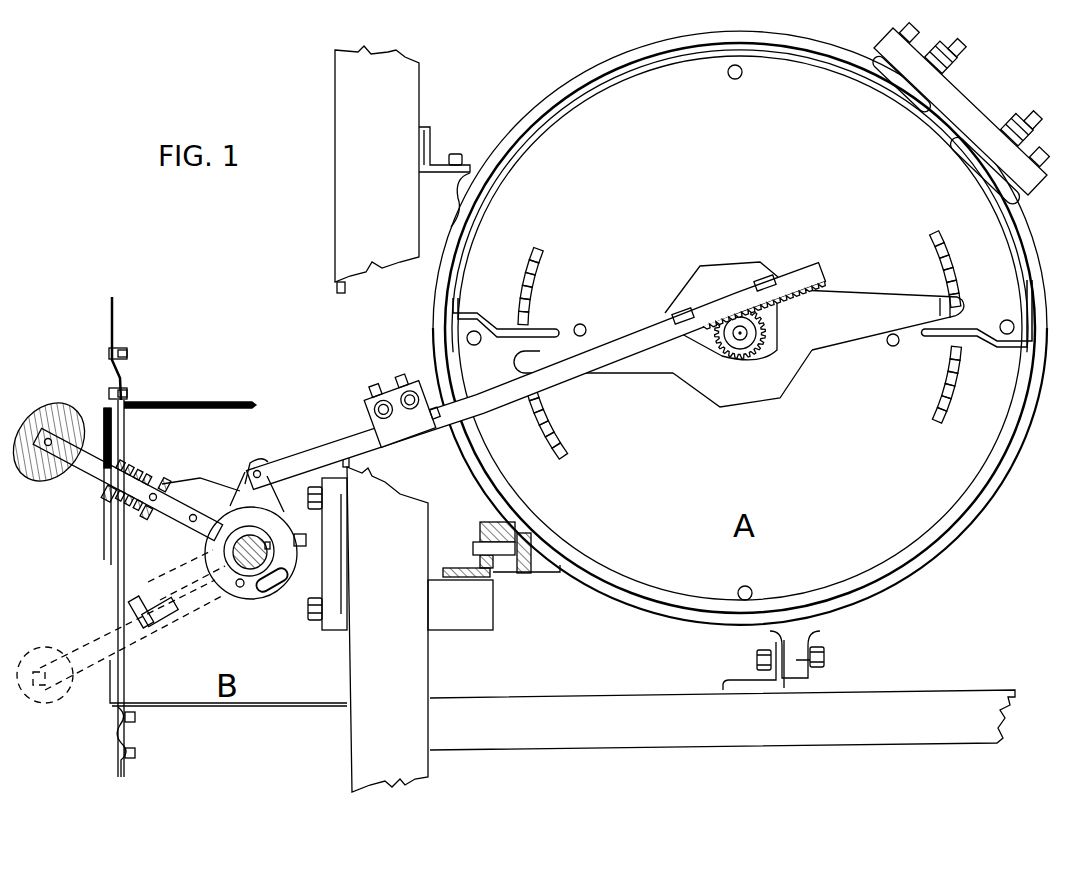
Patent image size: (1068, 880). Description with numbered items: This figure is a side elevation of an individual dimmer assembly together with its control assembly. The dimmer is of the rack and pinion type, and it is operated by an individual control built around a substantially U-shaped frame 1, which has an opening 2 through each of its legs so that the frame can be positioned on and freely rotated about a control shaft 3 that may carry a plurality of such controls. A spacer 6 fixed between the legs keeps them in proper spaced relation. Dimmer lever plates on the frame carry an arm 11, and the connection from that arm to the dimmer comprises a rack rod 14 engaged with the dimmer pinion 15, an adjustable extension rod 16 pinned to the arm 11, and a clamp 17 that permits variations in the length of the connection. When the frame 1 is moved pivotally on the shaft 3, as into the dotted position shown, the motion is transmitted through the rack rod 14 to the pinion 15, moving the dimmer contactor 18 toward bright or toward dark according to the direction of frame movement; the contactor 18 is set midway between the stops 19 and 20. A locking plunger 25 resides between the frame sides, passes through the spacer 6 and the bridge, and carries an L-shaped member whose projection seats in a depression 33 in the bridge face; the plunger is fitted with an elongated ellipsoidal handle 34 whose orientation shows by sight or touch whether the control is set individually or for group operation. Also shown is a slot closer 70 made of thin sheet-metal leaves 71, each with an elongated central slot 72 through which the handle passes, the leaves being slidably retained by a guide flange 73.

The U-shaped frame 1 is at (185, 489).
The opening 2 is at (250, 570).
The control shaft 3 is at (243, 572).
The spacer 6 is at (208, 498).
The arm 11 is at (257, 460).
The rack rod 14 is at (557, 377).
The dimmer pinion 15 is at (720, 357).
The adjustable extension rod 16 is at (328, 445).
The clamp 17 is at (413, 432).
The dimmer contactor 18 is at (857, 298).
The stop 19 is at (893, 347).
The stop 20 is at (580, 323).
The locking plunger 25 is at (77, 468).
The depression 33 is at (153, 522).
The handle 34 is at (34, 480).
The slot closer 70 is at (124, 406).
The leaf 71 is at (110, 538).
The slot 72 is at (113, 462).
The guide flange 73 is at (104, 406).